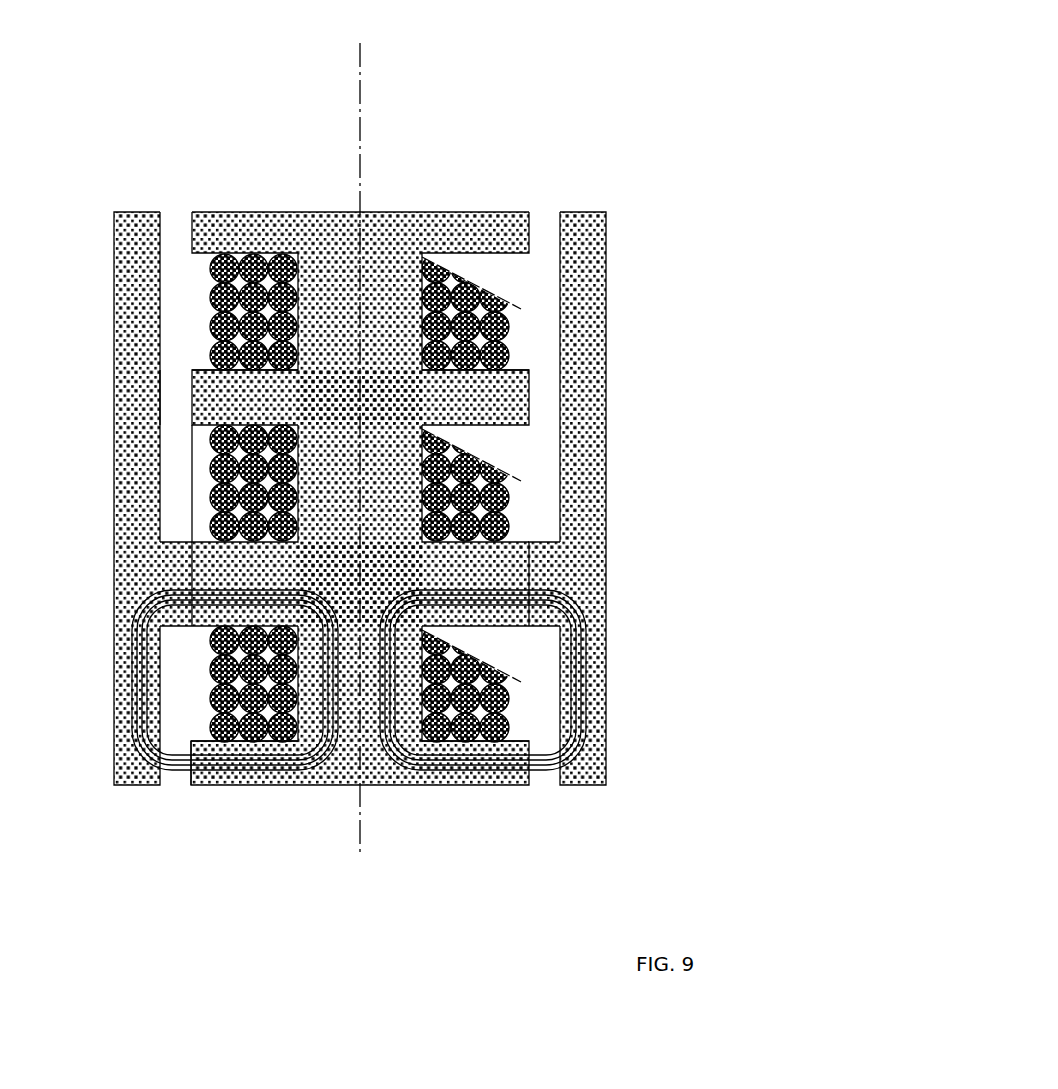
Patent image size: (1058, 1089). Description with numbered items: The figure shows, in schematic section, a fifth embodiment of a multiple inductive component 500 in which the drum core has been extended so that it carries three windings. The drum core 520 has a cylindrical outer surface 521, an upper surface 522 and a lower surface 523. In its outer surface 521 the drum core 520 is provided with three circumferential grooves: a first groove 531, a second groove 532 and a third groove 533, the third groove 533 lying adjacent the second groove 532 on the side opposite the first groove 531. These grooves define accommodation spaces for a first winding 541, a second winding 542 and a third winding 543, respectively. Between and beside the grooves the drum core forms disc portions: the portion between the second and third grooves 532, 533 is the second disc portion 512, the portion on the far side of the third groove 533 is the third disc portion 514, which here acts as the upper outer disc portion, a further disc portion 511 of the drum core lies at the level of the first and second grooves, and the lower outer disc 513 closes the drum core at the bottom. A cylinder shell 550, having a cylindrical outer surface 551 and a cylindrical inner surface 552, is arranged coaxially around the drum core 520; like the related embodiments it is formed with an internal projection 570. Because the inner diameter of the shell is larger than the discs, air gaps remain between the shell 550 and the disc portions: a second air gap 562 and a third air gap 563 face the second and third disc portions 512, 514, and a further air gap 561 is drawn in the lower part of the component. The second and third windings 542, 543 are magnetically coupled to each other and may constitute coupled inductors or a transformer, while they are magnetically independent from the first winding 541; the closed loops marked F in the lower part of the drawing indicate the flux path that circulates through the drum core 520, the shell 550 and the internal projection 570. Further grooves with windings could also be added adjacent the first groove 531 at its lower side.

The multiple inductive component 500 is at (708, 73).
The first core portion base 511 is at (216, 561).
The second disc portion 512 is at (230, 391).
The lower outer disc 513 is at (465, 767).
The third disc portion 514 is at (484, 224).
The drum core 520 is at (249, 781).
The cylindrical outer surface 521 is at (523, 215).
The upper surface 522 is at (406, 205).
The lower surface 523 is at (395, 778).
The first groove 531 is at (486, 633).
The second groove 532 is at (494, 439).
The third groove 533 is at (494, 267).
The first winding 541 is at (457, 690).
The second winding 542 is at (457, 490).
The third winding 543 is at (457, 318).
The cylinder shell 550 is at (121, 781).
The cylindrical outer surface 551 is at (106, 222).
The cylindrical inner surface 552 is at (163, 218).
The lower gap 561 is at (168, 770).
The second air gap 562 is at (167, 389).
The third air gap 563 is at (173, 217).
The internal projection 570 is at (538, 556).
The magnetic flux path F is at (122, 684).